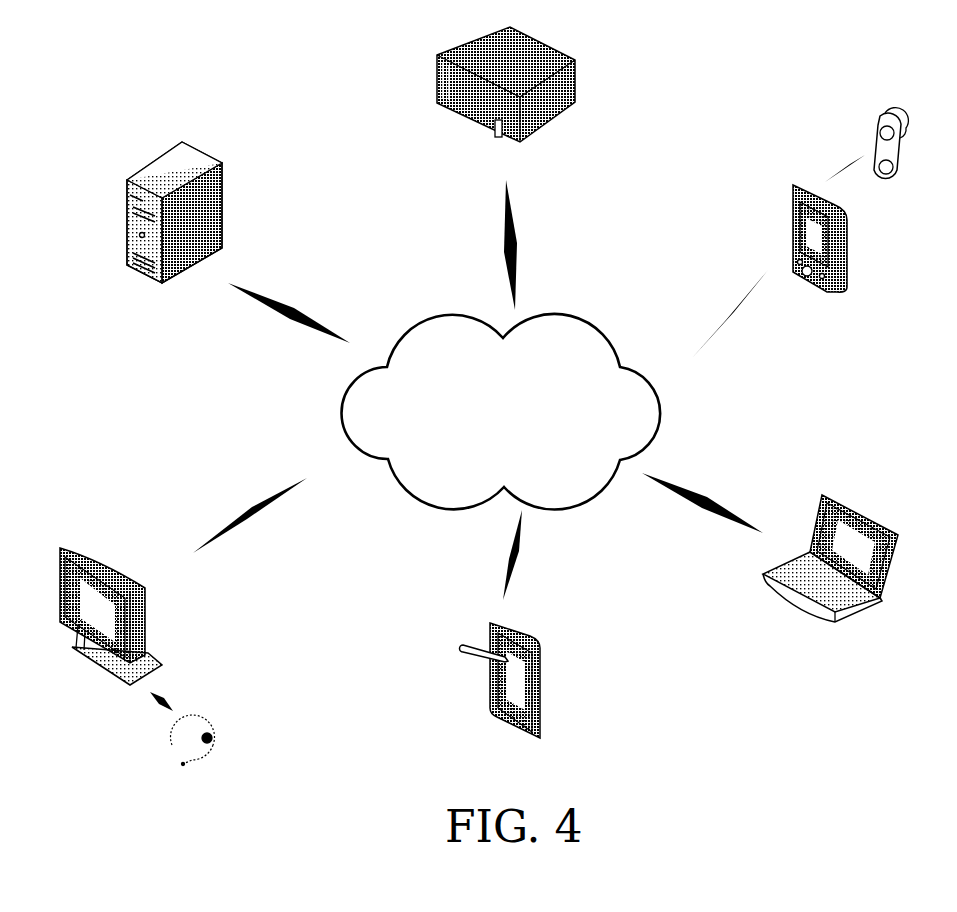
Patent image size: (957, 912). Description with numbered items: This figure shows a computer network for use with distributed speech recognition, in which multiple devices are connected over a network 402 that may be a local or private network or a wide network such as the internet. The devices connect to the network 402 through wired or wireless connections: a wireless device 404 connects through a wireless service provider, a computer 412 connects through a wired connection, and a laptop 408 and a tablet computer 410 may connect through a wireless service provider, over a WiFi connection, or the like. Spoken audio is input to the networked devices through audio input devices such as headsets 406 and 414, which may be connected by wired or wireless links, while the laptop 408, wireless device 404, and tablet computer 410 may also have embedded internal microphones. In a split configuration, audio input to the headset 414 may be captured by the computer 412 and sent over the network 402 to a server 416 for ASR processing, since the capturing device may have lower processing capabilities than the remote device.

The network 402 is at (557, 317).
The wireless device 404 is at (848, 223).
The headset 406 is at (893, 112).
The laptop 408 is at (840, 495).
The tablet computer 410 is at (540, 640).
The computer 412 is at (107, 562).
The headset 414 is at (222, 163).
The server 416 is at (575, 60).